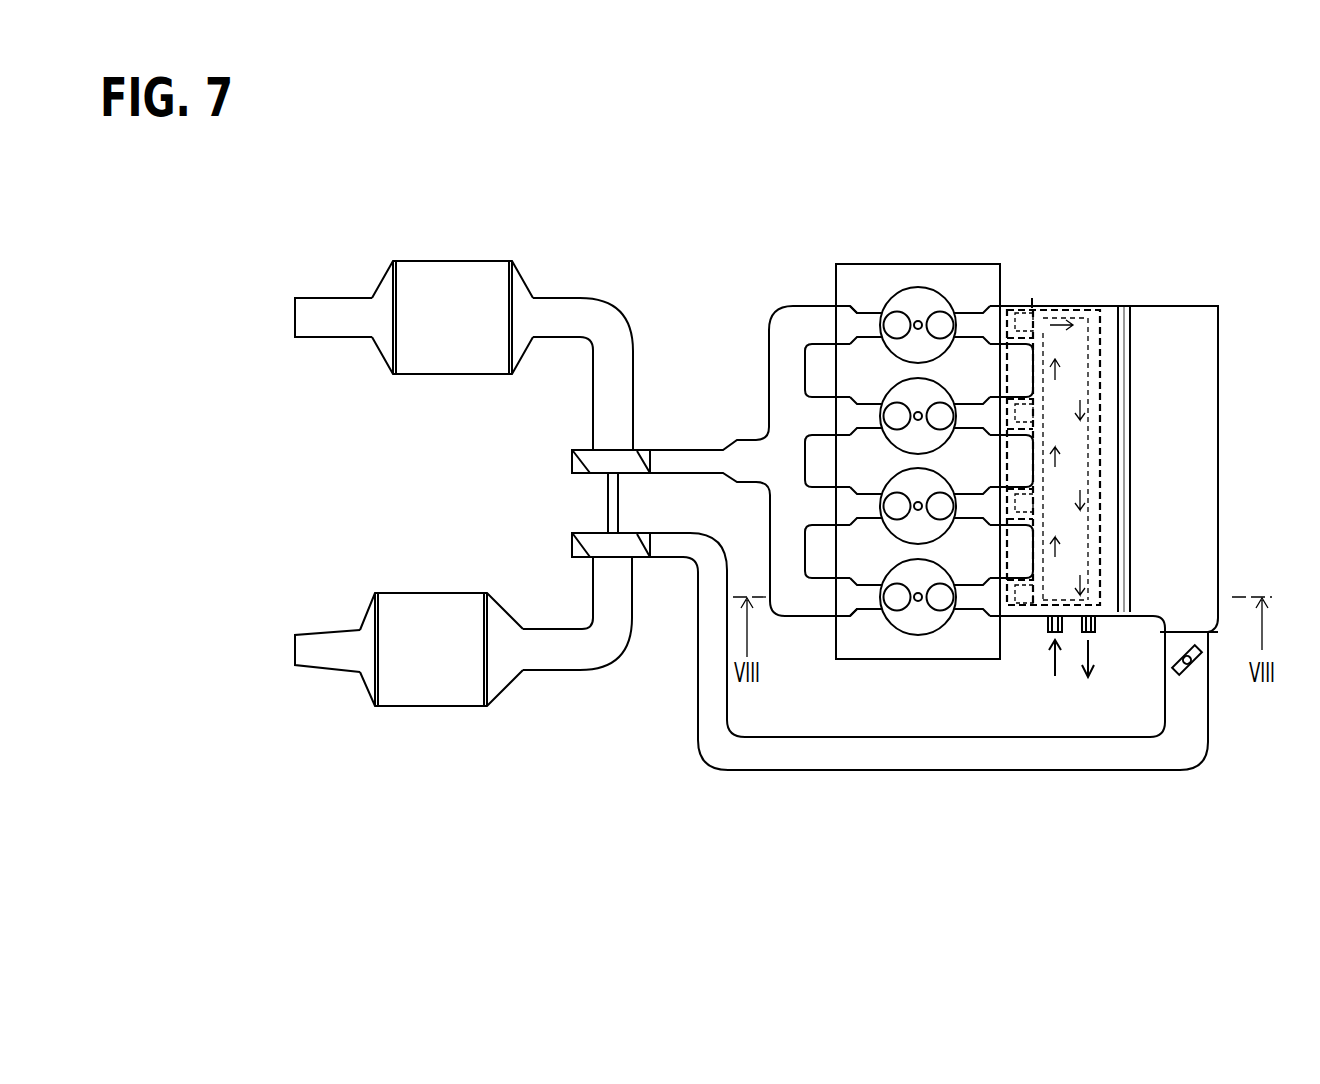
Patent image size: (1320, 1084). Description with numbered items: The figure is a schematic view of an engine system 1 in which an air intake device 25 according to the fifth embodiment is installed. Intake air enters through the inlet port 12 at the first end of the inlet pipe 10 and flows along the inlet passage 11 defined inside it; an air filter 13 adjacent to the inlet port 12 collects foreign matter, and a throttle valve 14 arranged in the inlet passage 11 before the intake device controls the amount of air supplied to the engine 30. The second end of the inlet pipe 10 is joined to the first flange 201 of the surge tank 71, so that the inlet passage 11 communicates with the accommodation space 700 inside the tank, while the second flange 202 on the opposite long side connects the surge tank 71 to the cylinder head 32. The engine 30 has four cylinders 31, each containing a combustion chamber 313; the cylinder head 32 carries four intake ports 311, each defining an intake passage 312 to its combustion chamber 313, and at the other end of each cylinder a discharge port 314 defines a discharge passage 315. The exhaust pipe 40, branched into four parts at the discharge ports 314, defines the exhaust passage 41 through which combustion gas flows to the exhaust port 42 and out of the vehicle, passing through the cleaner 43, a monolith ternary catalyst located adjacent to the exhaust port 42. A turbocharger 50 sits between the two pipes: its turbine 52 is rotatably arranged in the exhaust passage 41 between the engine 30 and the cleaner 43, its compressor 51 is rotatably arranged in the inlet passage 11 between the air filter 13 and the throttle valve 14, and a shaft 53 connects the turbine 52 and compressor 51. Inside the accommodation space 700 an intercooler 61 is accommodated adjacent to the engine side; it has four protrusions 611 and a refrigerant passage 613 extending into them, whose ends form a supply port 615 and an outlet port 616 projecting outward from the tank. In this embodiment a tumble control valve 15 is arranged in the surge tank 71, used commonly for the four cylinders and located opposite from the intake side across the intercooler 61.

The engine system 1 is at (1003, 810).
The inlet pipe 10 is at (872, 782).
The inlet passage 11 is at (795, 762).
The inlet port 12 is at (293, 655).
The air filter 13 is at (433, 707).
The throttle valve 14 is at (1205, 672).
The tumble control valve 15 is at (1132, 518).
The air intake device 25 is at (1071, 293).
The engine 30 is at (921, 254).
The cylinder 31 is at (903, 363).
The cylinder head 32 is at (865, 263).
The exhaust pipe 40 is at (560, 287).
The exhaust passage 41 is at (613, 333).
The exhaust port 42 is at (293, 317).
The cleaner 43 is at (452, 261).
The turbocharger 50 is at (650, 566).
The compressor 51 is at (584, 562).
The turbine 52 is at (582, 455).
The shaft 53 is at (606, 508).
The intercooler 61 is at (1103, 357).
The surge tank 71 is at (1220, 400).
The first flange 201 is at (1187, 632).
The second flange 202 is at (1034, 303).
The intake port 311 is at (968, 310).
The intake passage 312 is at (960, 310).
The combustion chamber 313 is at (923, 305).
The discharge port 314 is at (862, 310).
The discharge passage 315 is at (840, 312).
The protrusion 611 is at (1015, 302).
The refrigerant passage 613 is at (1090, 482).
The supply port 615 is at (1060, 630).
The outlet port 616 is at (1096, 628).
The accommodation space 700 is at (1168, 444).